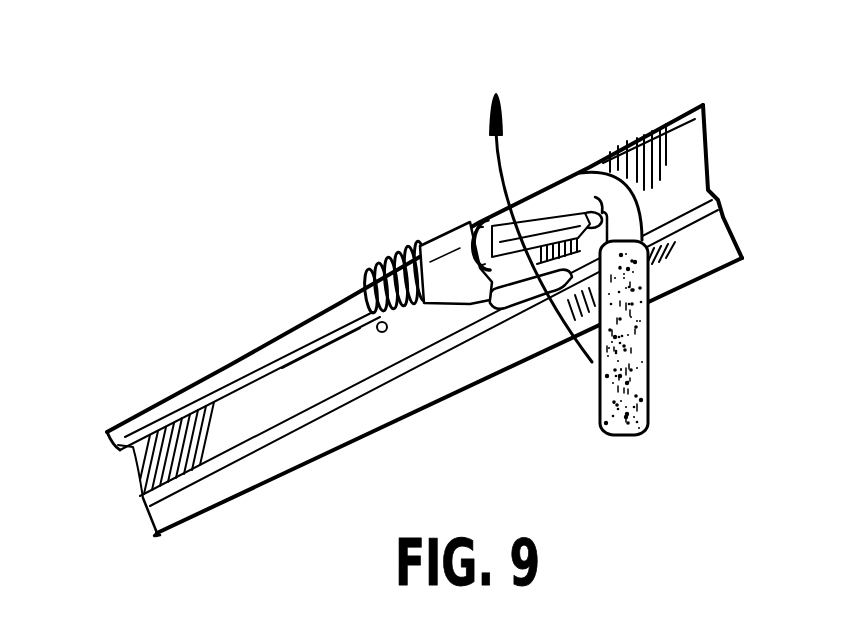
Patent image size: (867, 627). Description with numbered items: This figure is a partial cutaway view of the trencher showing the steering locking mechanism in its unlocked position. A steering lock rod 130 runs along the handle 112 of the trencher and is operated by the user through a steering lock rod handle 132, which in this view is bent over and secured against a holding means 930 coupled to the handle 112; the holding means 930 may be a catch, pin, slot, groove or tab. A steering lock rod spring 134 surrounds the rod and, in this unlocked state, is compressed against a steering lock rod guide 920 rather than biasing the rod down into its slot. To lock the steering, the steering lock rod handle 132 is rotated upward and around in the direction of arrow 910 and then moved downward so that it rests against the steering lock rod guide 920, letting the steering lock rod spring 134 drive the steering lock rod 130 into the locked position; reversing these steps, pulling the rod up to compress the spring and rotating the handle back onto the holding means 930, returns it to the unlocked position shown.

The steering lock rod 130 is at (193, 397).
The handle 112 is at (233, 422).
The steering lock rod spring 134 is at (380, 278).
The steering lock rod guide 920 is at (430, 250).
The holding means 930 is at (503, 297).
The steering lock rod handle 132 is at (647, 400).
The arrow 910 is at (501, 119).